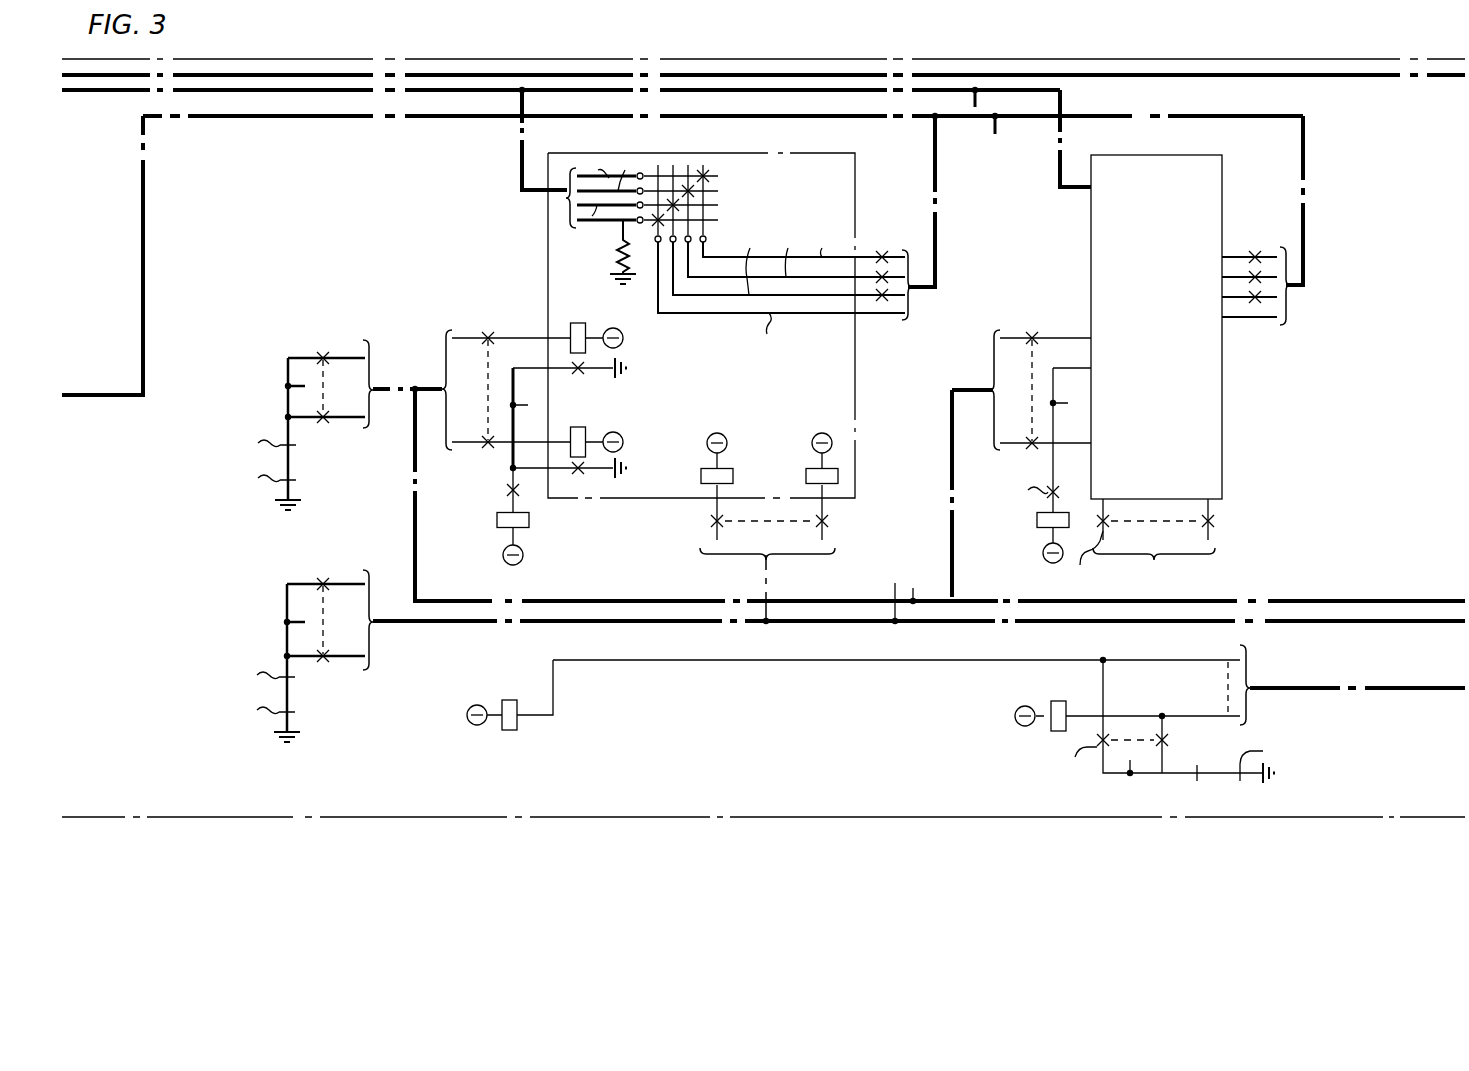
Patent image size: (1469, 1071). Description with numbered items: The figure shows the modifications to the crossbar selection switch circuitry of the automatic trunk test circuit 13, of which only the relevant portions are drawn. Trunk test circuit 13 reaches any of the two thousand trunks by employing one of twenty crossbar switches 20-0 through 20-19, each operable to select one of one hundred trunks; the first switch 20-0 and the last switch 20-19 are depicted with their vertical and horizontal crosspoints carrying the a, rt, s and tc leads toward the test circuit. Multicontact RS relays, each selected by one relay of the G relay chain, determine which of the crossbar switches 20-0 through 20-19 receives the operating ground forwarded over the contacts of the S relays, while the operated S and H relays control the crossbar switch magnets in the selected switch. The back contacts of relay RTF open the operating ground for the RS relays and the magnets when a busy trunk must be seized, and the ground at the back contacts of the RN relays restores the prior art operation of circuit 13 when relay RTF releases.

The crossbar switch 20-0 is at (740, 153).
The crossbar switch 20-19 is at (1139, 155).
The automatic trunk test circuit 13 is at (813, 810).